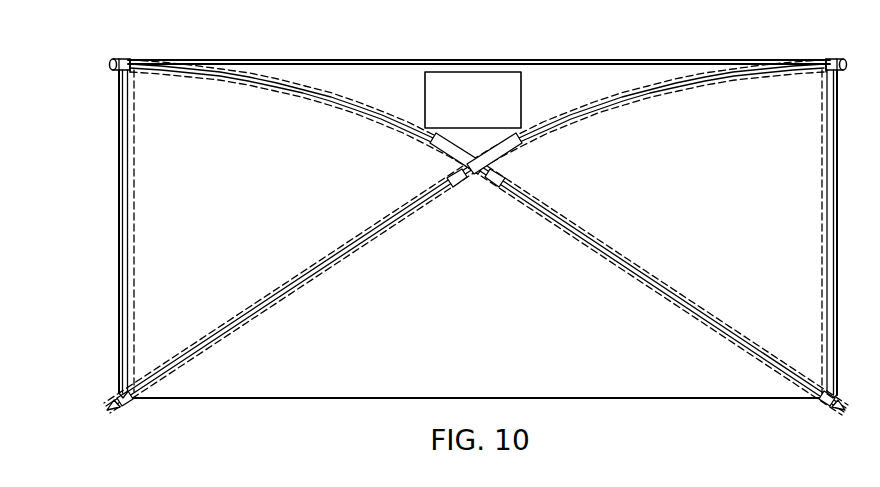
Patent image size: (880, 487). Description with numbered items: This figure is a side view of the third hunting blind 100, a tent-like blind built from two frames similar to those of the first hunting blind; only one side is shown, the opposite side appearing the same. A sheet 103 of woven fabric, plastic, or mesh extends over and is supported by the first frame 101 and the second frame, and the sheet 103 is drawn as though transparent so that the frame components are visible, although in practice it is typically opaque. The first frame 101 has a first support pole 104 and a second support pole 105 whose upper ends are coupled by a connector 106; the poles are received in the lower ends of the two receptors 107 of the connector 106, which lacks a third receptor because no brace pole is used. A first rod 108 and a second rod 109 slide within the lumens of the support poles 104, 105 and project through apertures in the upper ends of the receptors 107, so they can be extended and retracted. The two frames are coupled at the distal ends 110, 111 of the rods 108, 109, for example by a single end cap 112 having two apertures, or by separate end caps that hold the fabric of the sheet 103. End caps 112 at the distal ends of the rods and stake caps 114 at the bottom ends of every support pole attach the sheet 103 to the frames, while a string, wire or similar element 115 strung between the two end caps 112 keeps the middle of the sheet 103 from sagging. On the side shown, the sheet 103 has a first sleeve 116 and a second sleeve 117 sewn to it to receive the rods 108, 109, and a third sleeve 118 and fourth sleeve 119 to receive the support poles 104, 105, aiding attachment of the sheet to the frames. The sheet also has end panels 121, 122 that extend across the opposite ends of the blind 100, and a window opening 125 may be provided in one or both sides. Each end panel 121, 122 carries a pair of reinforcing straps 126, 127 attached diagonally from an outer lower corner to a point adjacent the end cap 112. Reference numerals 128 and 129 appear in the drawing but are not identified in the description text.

The third hunting blind 100 is at (284, 414).
The first frame 101 is at (434, 207).
The sheet 103 is at (632, 383).
The first support pole 104 is at (313, 270).
The second support pole 105 is at (613, 257).
The connector 106 is at (511, 164).
The receptors 107 is at (448, 150).
The first rod 108 is at (585, 112).
The second rod 109 is at (372, 117).
The distal end 110 is at (822, 67).
The distal end 111 is at (132, 68).
The end cap 112 is at (124, 59).
The stake caps 114 is at (128, 400).
The string, wire or similar element 115 is at (600, 65).
The first sleeve 116 is at (668, 92).
The second sleeve 117 is at (280, 92).
The third sleeve 118 is at (290, 300).
The fourth sleeve 119 is at (653, 292).
The end panel 121 is at (838, 247).
The end panel 122 is at (118, 220).
The window opening 125 is at (425, 100).
The reinforcing strap 126 is at (821, 200).
The reinforcing strap 127 is at (135, 198).
The right inner rail 128 is at (832, 267).
The left inner rail 129 is at (128, 250).